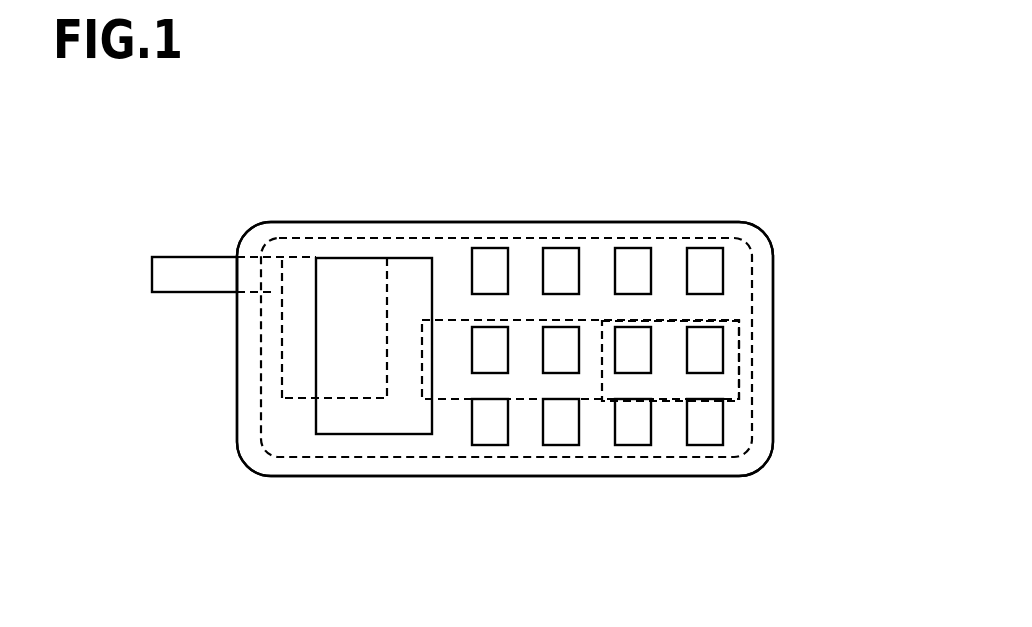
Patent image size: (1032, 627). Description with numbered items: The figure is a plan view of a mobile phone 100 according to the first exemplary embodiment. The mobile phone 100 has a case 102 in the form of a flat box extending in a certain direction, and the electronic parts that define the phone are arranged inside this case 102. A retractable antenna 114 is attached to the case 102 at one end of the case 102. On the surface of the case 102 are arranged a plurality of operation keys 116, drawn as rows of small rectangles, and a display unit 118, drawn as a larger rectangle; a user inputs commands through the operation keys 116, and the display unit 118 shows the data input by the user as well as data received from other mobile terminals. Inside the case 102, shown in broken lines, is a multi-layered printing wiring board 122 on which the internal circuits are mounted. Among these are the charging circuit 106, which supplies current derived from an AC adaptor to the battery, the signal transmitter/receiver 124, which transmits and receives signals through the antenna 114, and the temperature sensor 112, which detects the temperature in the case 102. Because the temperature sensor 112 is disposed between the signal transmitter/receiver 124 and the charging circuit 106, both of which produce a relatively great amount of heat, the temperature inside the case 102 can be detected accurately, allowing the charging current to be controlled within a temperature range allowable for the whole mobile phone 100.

The mobile phone 100 is at (653, 178).
The case 102 is at (482, 222).
The charging circuit 106 is at (739, 383).
The temperature sensor 112 is at (447, 399).
The retractable antenna 114 is at (186, 257).
The operation keys 116 is at (490, 445).
The display unit 118 is at (377, 435).
The multi-layered printing wiring board 122 is at (752, 285).
The signal transmitter/receiver 124 is at (300, 400).